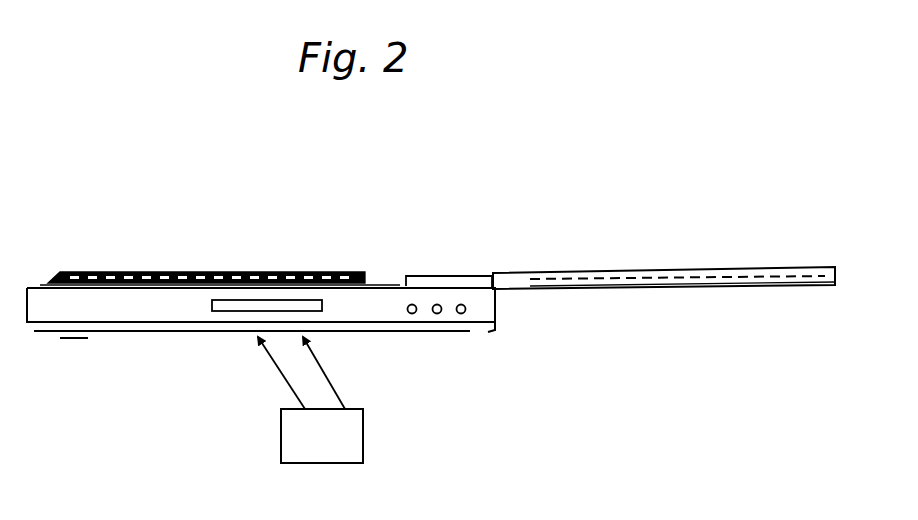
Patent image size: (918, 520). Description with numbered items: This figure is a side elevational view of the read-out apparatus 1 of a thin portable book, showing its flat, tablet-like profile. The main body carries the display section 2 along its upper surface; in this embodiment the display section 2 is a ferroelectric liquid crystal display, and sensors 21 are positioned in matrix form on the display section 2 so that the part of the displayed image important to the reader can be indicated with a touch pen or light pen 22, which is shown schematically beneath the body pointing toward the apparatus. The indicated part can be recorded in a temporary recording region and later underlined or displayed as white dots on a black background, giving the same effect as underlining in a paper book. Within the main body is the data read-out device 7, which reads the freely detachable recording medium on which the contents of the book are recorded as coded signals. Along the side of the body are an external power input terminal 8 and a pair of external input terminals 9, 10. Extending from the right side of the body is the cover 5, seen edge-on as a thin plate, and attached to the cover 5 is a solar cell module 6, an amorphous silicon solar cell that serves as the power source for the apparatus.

The read-out apparatus 1 is at (52, 318).
The display section 2 is at (315, 283).
The cover 5 is at (815, 265).
The solar cell module 6 is at (694, 293).
The data read-out device 7 is at (258, 305).
The external power input terminal 8 is at (414, 315).
The external input terminal 9 is at (437, 314).
The external input terminal 10 is at (462, 314).
The sensors 21 is at (150, 272).
The touch pen or light pen 22 is at (363, 436).